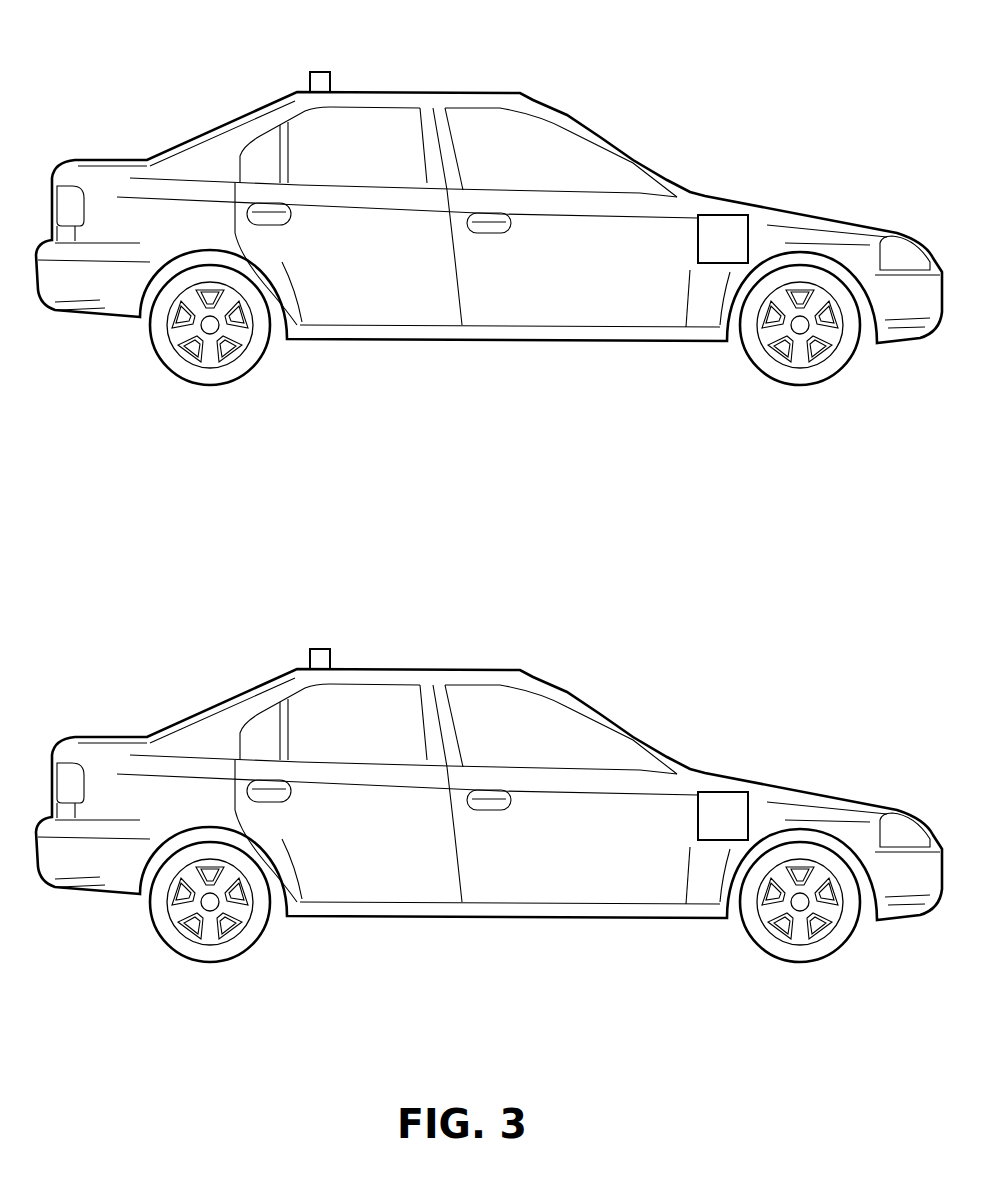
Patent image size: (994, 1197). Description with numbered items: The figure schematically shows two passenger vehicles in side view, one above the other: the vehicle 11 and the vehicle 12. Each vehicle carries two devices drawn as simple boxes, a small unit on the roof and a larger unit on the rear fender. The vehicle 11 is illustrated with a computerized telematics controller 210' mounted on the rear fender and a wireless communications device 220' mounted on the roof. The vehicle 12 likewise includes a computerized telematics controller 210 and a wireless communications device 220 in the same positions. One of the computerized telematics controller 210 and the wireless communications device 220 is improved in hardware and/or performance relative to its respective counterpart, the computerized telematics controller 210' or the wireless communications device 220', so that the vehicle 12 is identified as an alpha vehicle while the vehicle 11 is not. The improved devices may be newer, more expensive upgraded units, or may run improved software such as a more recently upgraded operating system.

The vehicle 11 is at (297, 91).
The vehicle 12 is at (297, 668).
The wireless communications device 220' is at (335, 54).
The computerized telematics controller 210' is at (729, 198).
The wireless communications device 220 is at (334, 632).
The computerized telematics controller 210 is at (727, 775).